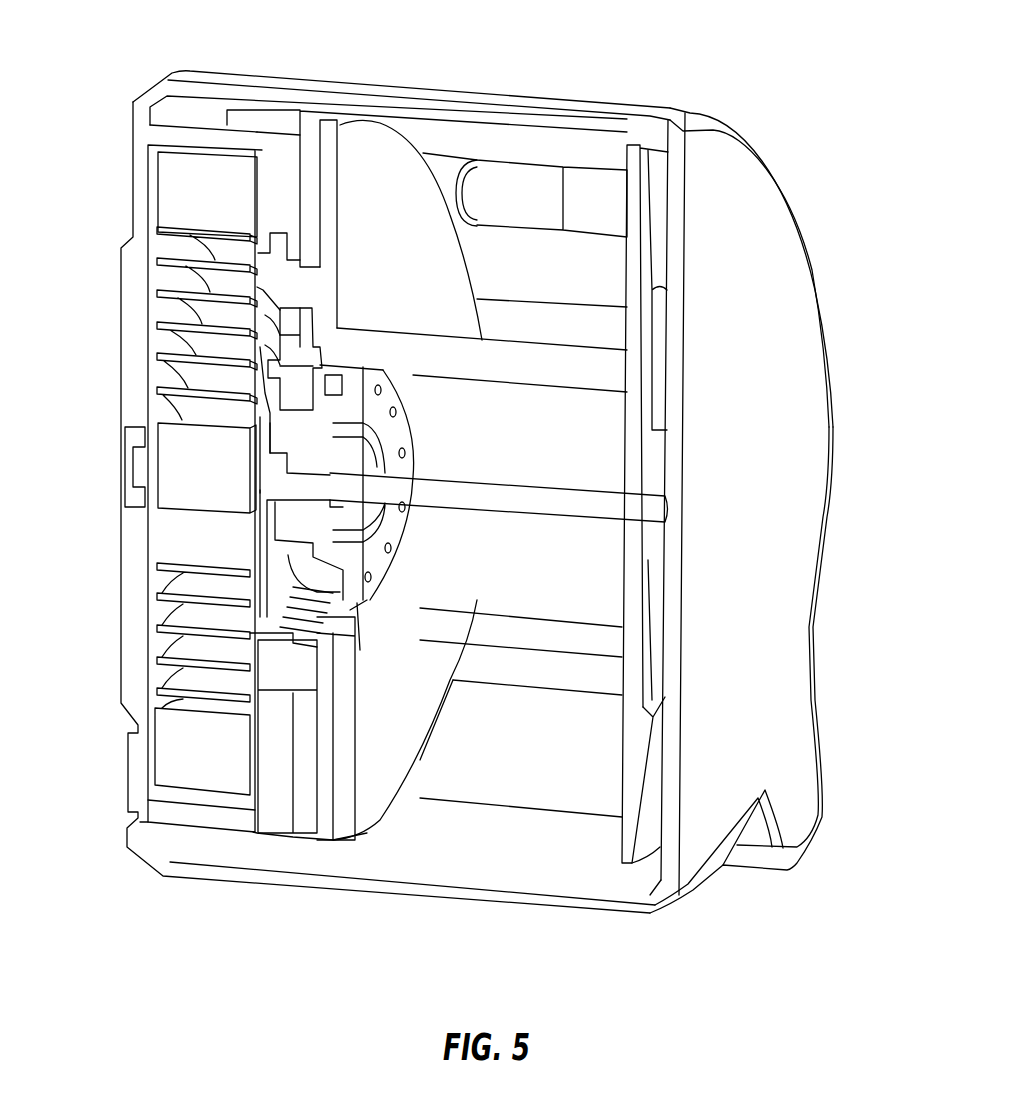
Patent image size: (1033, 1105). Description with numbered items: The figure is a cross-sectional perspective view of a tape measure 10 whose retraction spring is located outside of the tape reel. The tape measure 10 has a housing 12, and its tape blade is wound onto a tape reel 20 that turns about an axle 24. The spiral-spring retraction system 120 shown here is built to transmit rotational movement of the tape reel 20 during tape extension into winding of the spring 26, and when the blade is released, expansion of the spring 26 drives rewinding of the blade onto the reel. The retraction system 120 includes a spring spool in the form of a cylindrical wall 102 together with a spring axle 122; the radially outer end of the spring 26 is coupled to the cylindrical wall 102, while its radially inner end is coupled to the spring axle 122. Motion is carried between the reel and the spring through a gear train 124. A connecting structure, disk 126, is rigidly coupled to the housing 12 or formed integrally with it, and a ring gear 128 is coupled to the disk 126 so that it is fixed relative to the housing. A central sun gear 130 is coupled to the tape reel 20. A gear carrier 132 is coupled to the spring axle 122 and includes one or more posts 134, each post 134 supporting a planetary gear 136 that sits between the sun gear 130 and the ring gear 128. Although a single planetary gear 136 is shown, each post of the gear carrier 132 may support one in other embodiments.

The tape measure 10 is at (843, 172).
The housing 12 is at (748, 166).
The tape reel 20 is at (648, 203).
The axle 24 is at (583, 507).
The spring 26 is at (177, 207).
The cylindrical wall 102 is at (190, 140).
The retraction system 120 is at (108, 350).
The spring axle 122 is at (210, 518).
The gear train 124 is at (433, 550).
The disk 126 is at (305, 163).
The ring gear 128 is at (298, 268).
The sun gear 130 is at (357, 605).
The gear carrier 132 is at (257, 417).
The post 134 is at (283, 357).
The planetary gear 136 is at (295, 327).